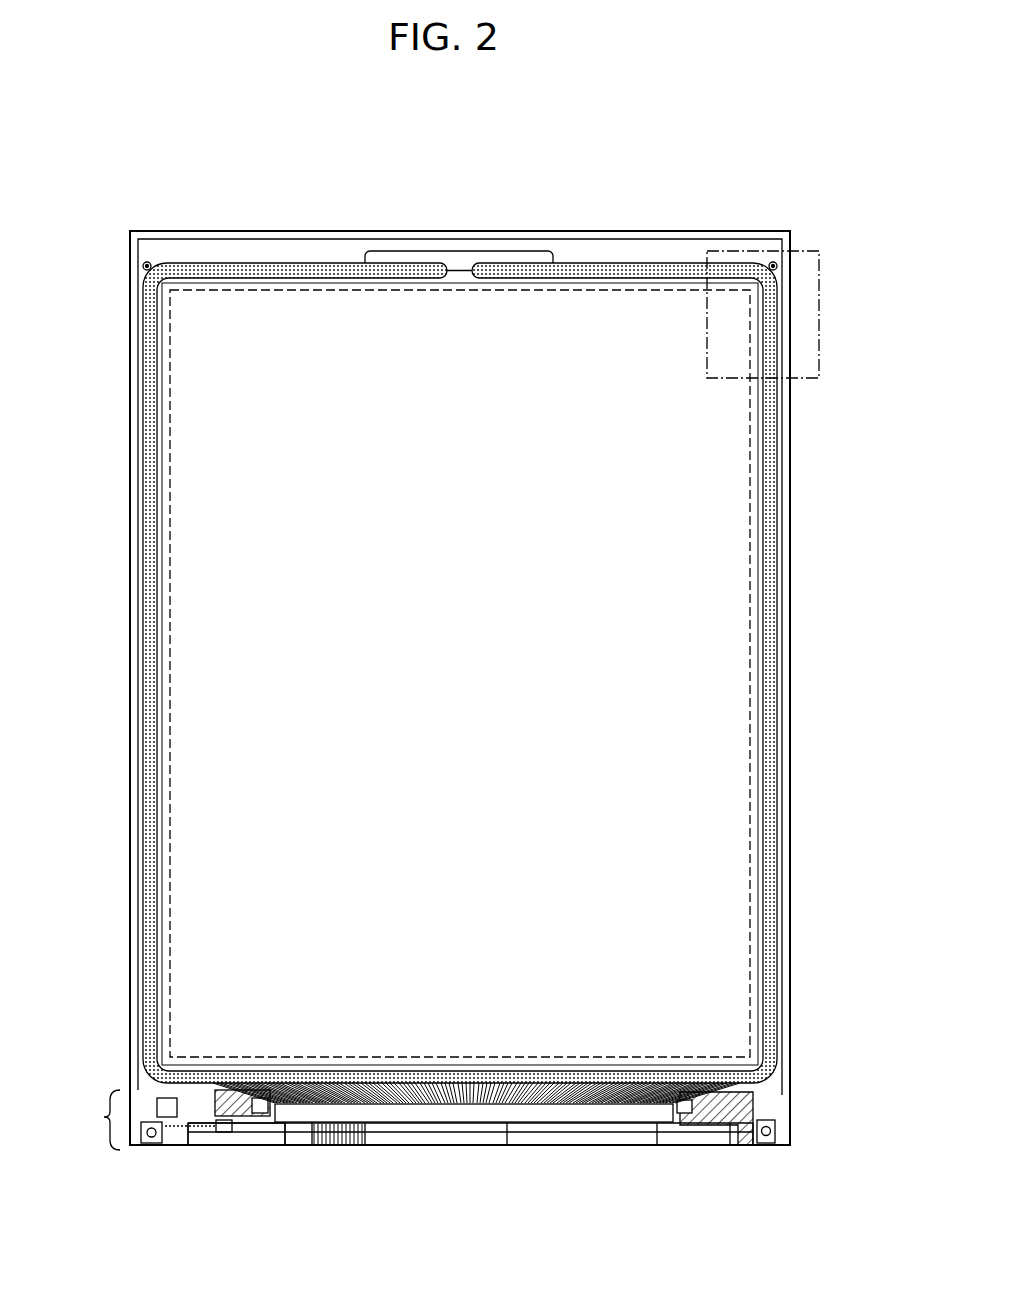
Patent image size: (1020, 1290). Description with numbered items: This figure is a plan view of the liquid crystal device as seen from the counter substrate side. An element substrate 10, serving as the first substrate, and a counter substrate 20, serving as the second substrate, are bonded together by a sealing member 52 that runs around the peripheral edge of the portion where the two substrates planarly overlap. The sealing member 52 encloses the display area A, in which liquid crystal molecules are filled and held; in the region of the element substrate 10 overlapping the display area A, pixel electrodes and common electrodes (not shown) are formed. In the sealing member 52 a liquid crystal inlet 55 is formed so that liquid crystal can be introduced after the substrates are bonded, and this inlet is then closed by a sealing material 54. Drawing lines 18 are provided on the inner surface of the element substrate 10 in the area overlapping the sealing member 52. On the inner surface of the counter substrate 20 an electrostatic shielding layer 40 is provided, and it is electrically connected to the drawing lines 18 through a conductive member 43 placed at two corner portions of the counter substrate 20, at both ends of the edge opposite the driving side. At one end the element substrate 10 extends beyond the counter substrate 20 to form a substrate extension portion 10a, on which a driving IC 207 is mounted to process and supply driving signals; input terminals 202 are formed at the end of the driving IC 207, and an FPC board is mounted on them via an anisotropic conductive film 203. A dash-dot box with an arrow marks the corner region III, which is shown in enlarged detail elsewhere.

The element substrate 10 is at (594, 238).
The substrate extension portion 10a is at (92, 1120).
The counter substrate 20 is at (654, 247).
The drawing lines 18 is at (143, 284).
The electrostatic shielding layer 40 is at (752, 763).
The conductive member 43 is at (147, 262).
The sealing member 52 is at (772, 695).
The sealing material 54 is at (405, 262).
The liquid crystal inlet 55 is at (481, 263).
The input terminals 202 is at (665, 1150).
The anisotropic conductive film 203 is at (230, 1137).
The driving IC 207 is at (663, 1112).
The display area A is at (312, 682).
The section III is at (818, 345).